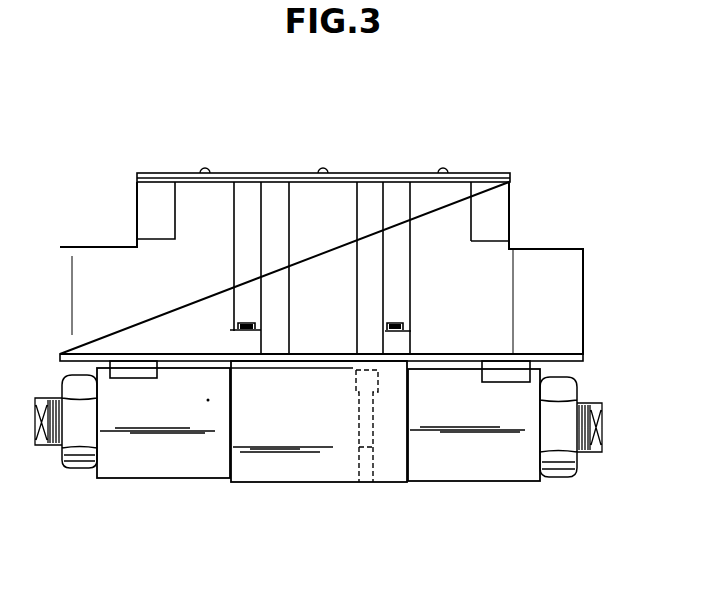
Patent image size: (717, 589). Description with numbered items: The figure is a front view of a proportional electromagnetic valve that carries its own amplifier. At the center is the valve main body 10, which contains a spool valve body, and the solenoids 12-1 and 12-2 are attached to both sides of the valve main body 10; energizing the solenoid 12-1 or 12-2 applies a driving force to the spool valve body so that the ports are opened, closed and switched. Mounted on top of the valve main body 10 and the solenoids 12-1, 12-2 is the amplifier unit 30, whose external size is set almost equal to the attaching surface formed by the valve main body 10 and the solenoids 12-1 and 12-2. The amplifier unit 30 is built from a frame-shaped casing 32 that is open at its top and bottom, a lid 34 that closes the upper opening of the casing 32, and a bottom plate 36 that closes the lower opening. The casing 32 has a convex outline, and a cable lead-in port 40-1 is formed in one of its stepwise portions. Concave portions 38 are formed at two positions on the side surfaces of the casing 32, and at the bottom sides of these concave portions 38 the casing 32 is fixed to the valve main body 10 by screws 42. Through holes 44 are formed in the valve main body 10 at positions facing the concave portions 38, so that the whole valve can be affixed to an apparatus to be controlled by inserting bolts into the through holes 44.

The valve main body 10 is at (328, 472).
The solenoid 12-1 is at (141, 463).
The solenoid 12-2 is at (503, 470).
The amplifier unit 30 is at (545, 248).
The casing 32 is at (456, 200).
The lid 34 is at (343, 171).
The bottom plate 36 is at (584, 360).
The concave portions 38 is at (274, 193).
The cable lead-in port 40-1 is at (150, 195).
The screws 42 is at (234, 325).
The through holes 44 is at (365, 480).